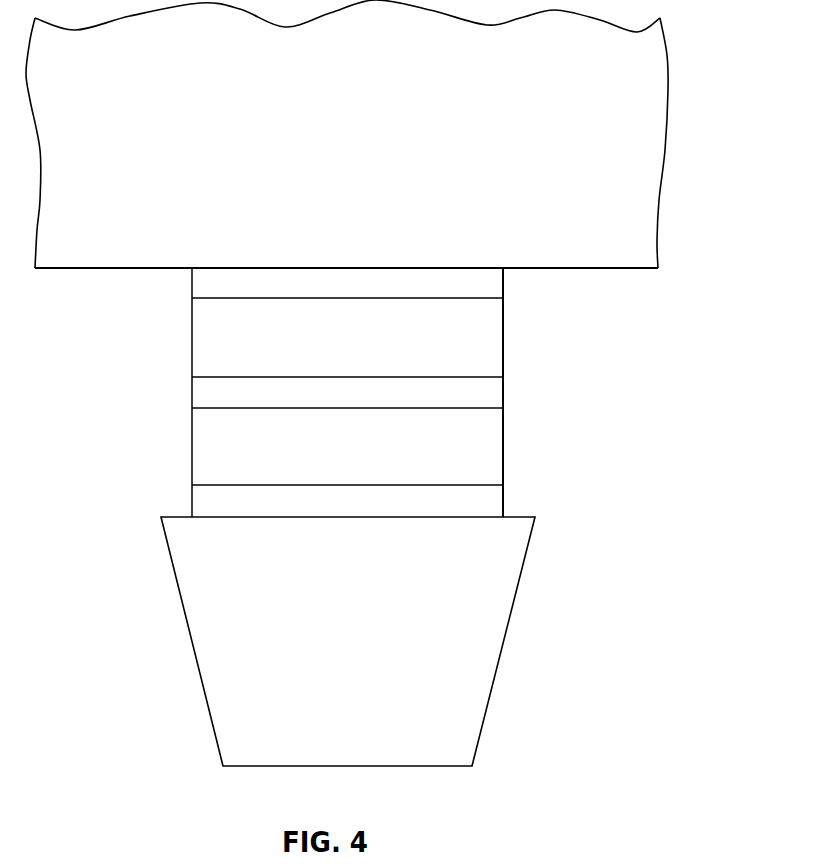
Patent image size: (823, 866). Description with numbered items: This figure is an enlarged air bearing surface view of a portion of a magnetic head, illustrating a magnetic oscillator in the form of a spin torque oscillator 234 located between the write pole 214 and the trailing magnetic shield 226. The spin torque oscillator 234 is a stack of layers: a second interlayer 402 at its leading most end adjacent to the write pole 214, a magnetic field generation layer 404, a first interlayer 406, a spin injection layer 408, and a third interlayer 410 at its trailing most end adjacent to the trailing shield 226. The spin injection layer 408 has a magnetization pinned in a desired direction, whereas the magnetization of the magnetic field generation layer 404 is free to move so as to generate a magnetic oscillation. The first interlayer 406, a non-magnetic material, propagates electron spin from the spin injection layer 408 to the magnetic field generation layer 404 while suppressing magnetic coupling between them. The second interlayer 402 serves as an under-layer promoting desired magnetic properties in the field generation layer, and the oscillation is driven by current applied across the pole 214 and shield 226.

The trailing magnetic shield 226 is at (418, 145).
The spin torque oscillator 234 is at (667, 517).
The third interlayer 410 is at (490, 284).
The spin injection layer 408 is at (472, 330).
The first interlayer 406 is at (480, 391).
The magnetic field generation layer 404 is at (475, 455).
The second interlayer 402 is at (483, 501).
The write pole 214 is at (393, 645).